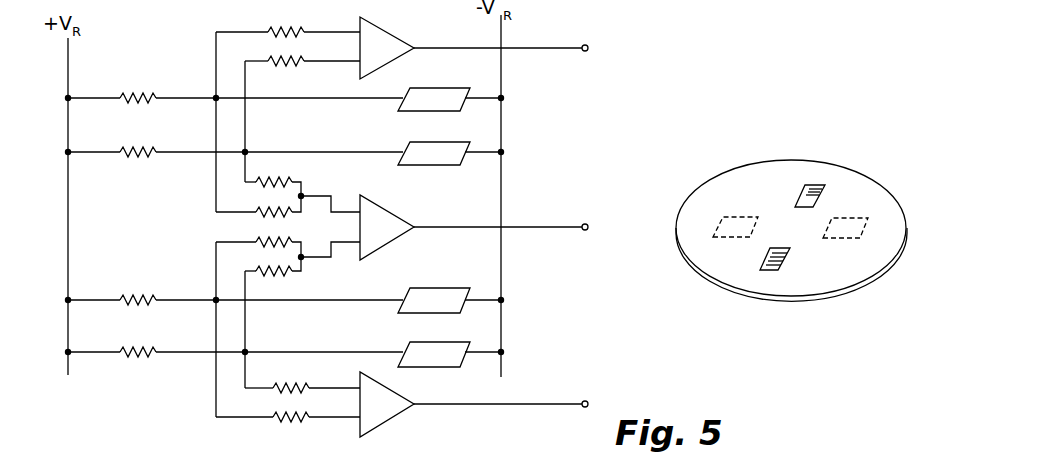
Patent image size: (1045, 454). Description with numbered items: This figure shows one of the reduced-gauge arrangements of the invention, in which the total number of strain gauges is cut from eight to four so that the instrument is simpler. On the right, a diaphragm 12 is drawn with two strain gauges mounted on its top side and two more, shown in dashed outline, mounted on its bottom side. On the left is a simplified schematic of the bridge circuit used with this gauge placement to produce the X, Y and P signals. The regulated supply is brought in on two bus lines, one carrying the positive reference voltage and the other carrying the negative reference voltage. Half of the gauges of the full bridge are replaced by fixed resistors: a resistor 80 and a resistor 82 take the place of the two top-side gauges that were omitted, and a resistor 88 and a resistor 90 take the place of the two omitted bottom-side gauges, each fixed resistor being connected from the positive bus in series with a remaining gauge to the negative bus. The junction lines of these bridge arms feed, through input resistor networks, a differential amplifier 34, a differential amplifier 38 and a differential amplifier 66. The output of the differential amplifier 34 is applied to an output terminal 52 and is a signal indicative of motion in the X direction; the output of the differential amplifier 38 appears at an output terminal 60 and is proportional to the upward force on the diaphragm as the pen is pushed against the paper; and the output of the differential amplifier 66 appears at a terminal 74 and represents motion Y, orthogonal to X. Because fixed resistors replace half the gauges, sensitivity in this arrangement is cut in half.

The diaphragm 12 is at (712, 282).
The differential amplifier 34 is at (383, 30).
The differential amplifier 38 is at (385, 212).
The output terminal 52 is at (583, 52).
The output terminal 60 is at (583, 224).
The differential amplifier 66 is at (393, 395).
The terminal 74 is at (583, 400).
The resistor 80 is at (131, 91).
The resistor 82 is at (133, 146).
The resistor 88 is at (132, 294).
The resistor 90 is at (134, 346).